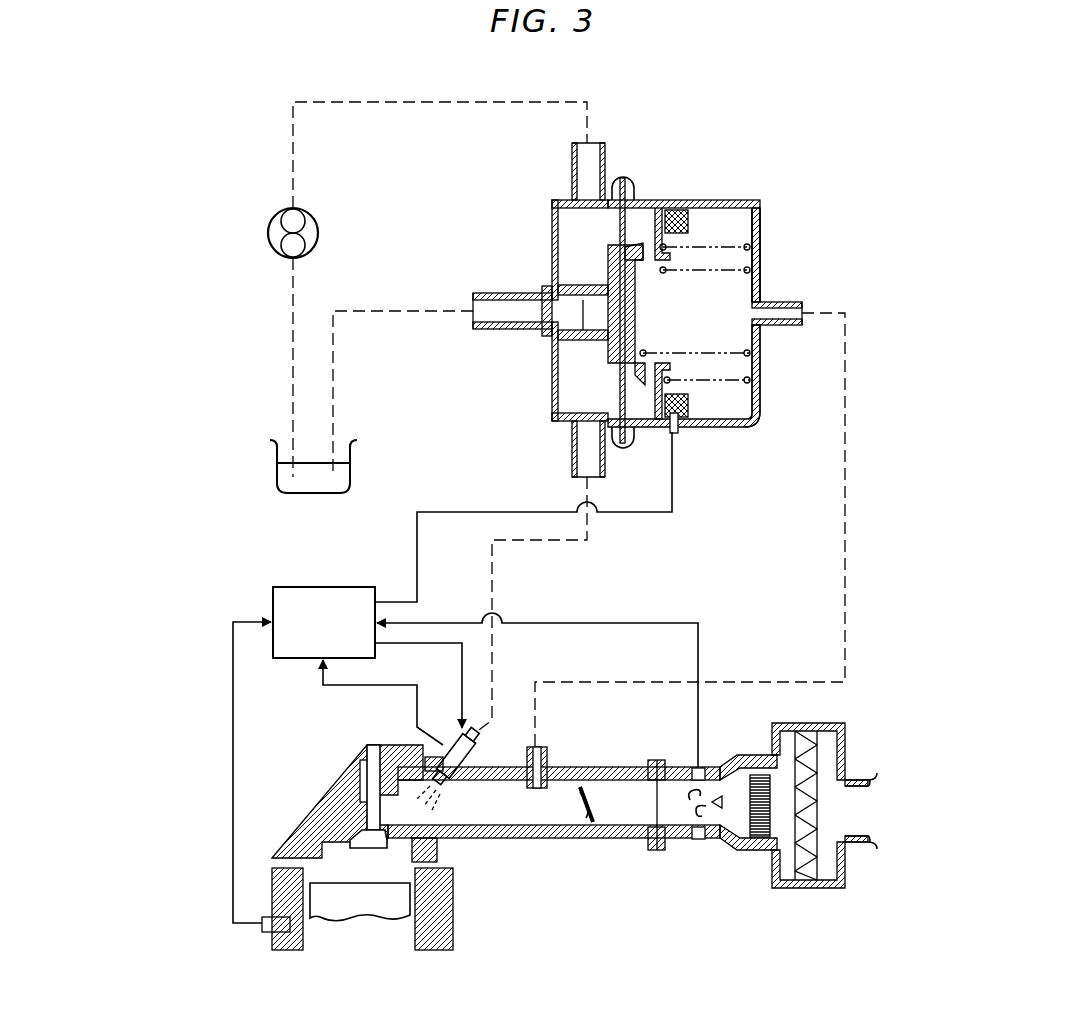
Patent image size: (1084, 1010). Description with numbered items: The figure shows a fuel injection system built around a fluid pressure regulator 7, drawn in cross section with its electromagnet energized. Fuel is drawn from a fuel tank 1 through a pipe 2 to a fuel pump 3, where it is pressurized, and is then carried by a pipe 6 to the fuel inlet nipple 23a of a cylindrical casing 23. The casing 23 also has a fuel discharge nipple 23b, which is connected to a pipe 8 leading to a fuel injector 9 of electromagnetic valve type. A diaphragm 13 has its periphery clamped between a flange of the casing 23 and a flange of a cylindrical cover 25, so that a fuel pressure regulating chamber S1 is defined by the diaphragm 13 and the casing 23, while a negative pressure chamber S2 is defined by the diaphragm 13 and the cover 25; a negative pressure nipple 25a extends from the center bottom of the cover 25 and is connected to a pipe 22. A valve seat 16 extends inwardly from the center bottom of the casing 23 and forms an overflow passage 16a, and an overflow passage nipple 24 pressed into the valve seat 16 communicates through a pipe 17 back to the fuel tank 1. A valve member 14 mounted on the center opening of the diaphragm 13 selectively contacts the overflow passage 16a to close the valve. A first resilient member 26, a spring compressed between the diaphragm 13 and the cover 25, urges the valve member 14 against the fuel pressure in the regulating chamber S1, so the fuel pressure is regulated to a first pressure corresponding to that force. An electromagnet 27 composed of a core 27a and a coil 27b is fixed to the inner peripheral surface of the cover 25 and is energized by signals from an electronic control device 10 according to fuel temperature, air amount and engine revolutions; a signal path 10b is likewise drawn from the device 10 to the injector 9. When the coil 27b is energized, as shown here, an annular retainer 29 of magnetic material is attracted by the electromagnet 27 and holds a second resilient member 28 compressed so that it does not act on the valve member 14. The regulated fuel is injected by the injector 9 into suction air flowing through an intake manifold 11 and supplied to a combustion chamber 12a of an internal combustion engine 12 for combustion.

The fuel tank 1 is at (277, 473).
The pipe 2 is at (292, 310).
The fuel pump 3 is at (268, 233).
The pipe 6 is at (384, 102).
The pressure regulator 7 is at (752, 202).
The pipe 8 is at (492, 582).
The fuel injector 9 is at (479, 735).
The electronic control device 10 is at (332, 592).
The injector drive signal 10b is at (450, 738).
The intake manifold 11 is at (503, 816).
The internal combustion engine 12 is at (327, 820).
The combustion chamber 12a is at (393, 875).
The diaphragm 13 is at (618, 385).
The valve member 14 is at (612, 258).
The valve seat 16 is at (582, 284).
The overflow passage 16a is at (605, 330).
The pipe 17 is at (334, 386).
The pipe 22 is at (845, 566).
The cylindrical casing 23 is at (550, 252).
The fuel inlet nipple 23a is at (605, 153).
The fuel discharge nipple 23b is at (604, 468).
The overflow passage nipple 24 is at (481, 330).
The cylindrical cover 25 is at (754, 230).
The negative pressure nipple 25a is at (802, 304).
The first resilient member 26 is at (734, 353).
The electromagnet 27 is at (688, 218).
The core 27a is at (657, 208).
The coil 27b is at (672, 210).
The second resilient member 28 is at (734, 386).
The annular retainer 29 is at (654, 381).
The fuel pressure regulating chamber S1 is at (562, 378).
The negative pressure chamber S2 is at (740, 293).